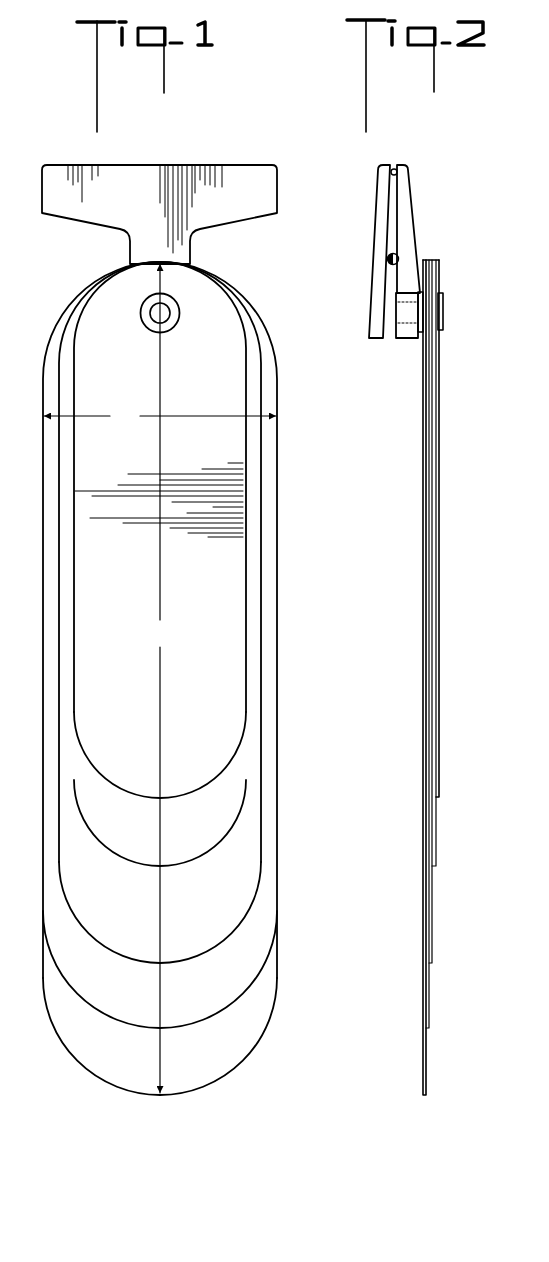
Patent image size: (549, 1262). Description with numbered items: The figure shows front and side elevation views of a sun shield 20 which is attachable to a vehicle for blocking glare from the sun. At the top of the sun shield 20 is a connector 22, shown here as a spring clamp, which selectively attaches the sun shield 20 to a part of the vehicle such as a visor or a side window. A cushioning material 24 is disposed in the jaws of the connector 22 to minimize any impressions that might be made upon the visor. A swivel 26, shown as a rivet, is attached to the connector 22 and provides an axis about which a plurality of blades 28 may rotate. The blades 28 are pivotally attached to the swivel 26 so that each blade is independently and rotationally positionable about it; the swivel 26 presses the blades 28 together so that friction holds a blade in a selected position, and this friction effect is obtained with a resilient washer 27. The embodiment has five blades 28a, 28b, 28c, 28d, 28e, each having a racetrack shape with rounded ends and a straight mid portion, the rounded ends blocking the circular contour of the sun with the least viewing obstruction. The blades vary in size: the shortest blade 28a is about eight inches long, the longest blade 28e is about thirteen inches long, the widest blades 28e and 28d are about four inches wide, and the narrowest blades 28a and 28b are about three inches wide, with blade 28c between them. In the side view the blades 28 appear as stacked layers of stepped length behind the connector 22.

In FIG. 1, the sun shield 20 is at (180, 594).
In FIG. 2, the sun shield 20 is at (442, 594).
In FIG. 1, the connector 22 is at (57, 185).
In FIG. 2, the connector 22 is at (382, 248).
In FIG. 2, the cushioning material 24 is at (394, 168).
In FIG. 1, the swivel 26 is at (163, 313).
In FIG. 2, the swivel 26 is at (444, 313).
In FIG. 2, the resilient washer 27 is at (422, 339).
In FIG. 1, the blades 28 is at (190, 665).
In FIG. 1, the shortest blade 28a is at (212, 758).
In FIG. 2, the shortest blade 28a is at (439, 775).
In FIG. 1, the blade 28b is at (197, 845).
In FIG. 2, the blade 28b is at (437, 852).
In FIG. 1, the blade 28c is at (222, 927).
In FIG. 2, the blade 28c is at (433, 937).
In FIG. 1, the blade 28d is at (217, 998).
In FIG. 2, the blade 28d is at (431, 1010).
In FIG. 1, the longest blade 28e is at (218, 1063).
In FIG. 2, the longest blade 28e is at (428, 1075).